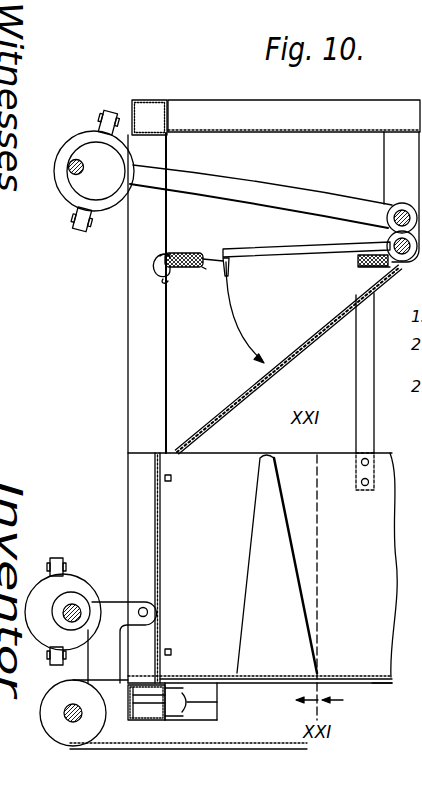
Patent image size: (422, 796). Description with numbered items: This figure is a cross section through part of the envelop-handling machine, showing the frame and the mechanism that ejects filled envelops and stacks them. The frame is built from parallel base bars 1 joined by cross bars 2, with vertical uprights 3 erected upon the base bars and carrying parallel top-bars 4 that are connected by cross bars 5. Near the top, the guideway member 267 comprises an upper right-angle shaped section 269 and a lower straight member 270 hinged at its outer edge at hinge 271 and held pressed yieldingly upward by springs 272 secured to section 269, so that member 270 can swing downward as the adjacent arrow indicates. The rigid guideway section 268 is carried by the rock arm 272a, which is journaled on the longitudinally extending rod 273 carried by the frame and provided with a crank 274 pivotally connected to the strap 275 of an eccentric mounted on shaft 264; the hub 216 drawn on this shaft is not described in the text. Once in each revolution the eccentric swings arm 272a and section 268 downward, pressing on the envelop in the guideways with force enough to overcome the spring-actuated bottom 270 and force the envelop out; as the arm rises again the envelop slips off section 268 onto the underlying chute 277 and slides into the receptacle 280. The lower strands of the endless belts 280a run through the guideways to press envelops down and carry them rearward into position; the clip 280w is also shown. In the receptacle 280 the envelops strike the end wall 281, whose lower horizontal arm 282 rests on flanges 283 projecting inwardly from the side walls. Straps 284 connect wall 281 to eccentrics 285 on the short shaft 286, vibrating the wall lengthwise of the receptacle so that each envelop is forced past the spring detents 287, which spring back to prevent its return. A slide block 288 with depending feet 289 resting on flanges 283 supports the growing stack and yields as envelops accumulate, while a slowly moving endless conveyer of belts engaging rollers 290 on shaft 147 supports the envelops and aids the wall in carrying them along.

The base bars 1 is at (133, 721).
The cross bars 2 is at (211, 704).
The vertical uprights 3 is at (128, 378).
The top-bars 4 is at (143, 100).
The cross bars 5 is at (234, 100).
The shaft 147 is at (66, 720).
The hub 216 is at (83, 188).
The shaft 264 is at (71, 172).
The guideway member 267 is at (197, 253).
The guideway section 268 is at (358, 267).
The right-angle shaped section 269 is at (157, 258).
The straight member 270 is at (122, 306).
The hinge 271 is at (152, 268).
The springs 272 is at (202, 269).
The rock arm 272a is at (303, 250).
The rod 273 is at (394, 241).
The crank 274 is at (371, 197).
The strap 275 is at (246, 202).
The chute 277 is at (288, 363).
The receptacle 280 is at (336, 462).
The endless belts 280a is at (357, 262).
The clip 280w is at (229, 266).
The end wall 281 is at (155, 486).
The horizontal arm 282 is at (233, 686).
The flanges 283 is at (372, 684).
The straps 284 is at (117, 608).
The eccentrics 285 is at (33, 600).
The short shaft 286 is at (74, 605).
The spring detents 287 is at (172, 476).
The slide block 288 is at (277, 564).
The depending feet 289 is at (352, 676).
The rollers 290 is at (60, 693).